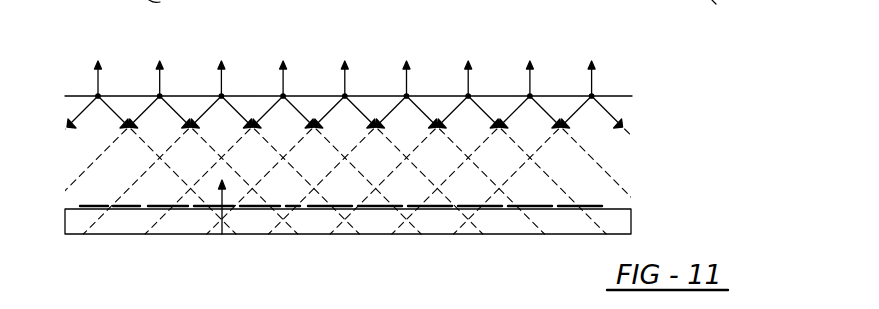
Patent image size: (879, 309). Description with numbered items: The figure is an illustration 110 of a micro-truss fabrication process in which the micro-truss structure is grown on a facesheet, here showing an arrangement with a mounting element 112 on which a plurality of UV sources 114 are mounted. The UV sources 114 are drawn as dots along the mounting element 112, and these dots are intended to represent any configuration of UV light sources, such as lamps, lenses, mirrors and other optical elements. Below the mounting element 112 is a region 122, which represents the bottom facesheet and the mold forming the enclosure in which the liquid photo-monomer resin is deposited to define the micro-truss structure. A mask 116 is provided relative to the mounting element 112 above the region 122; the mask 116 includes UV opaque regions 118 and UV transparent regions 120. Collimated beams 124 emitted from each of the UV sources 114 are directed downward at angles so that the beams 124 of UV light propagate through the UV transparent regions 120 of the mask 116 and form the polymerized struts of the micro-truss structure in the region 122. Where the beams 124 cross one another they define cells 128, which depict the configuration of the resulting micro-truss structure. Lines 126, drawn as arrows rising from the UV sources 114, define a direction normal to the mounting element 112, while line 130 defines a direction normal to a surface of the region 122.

The illustration 110 is at (624, 74).
The mounting element 112 is at (437, 94).
The UV sources 114 is at (405, 95).
The mask 116 is at (560, 208).
The UV opaque regions 118 is at (97, 206).
The UV transparent regions 120 is at (175, 203).
The region 122 is at (443, 235).
The collimated beams 124 is at (270, 144).
The lines 126 is at (157, 82).
The cells 128 is at (377, 162).
The line 130 is at (223, 197).